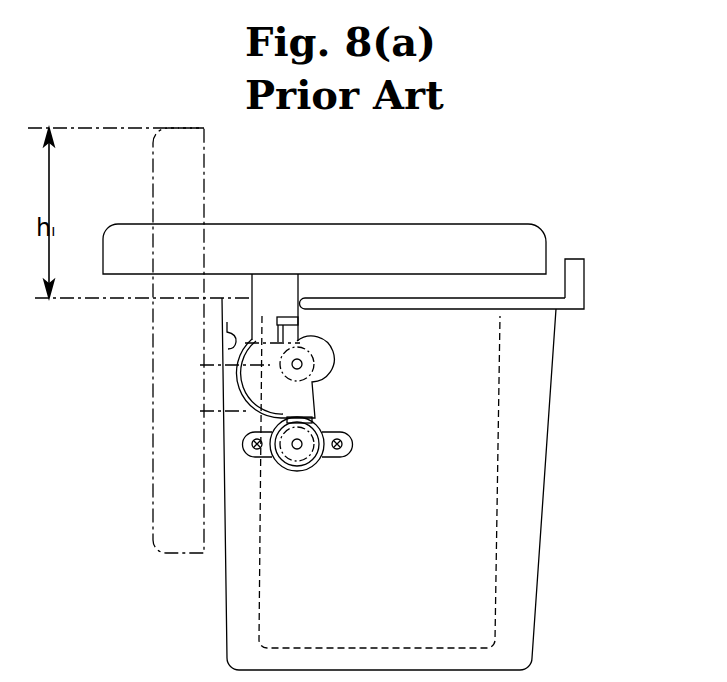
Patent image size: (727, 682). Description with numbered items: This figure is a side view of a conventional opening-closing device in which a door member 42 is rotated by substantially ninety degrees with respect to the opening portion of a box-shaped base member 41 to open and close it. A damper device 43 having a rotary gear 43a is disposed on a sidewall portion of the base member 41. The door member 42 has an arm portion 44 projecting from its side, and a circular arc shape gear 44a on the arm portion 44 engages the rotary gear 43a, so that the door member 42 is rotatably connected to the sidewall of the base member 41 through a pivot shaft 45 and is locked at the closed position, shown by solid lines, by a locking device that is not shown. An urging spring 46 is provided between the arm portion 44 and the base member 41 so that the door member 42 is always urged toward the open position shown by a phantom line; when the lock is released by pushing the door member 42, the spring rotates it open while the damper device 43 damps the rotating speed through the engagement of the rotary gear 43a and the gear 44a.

The base member 41 is at (542, 513).
The door member 42 is at (453, 225).
The damper device 43 is at (283, 475).
The rotary gear 43a is at (307, 463).
The arm portion 44 is at (300, 286).
The circular arc shape gear 44a is at (240, 376).
The pivot shaft 45 is at (305, 364).
The urging spring 46 is at (226, 323).